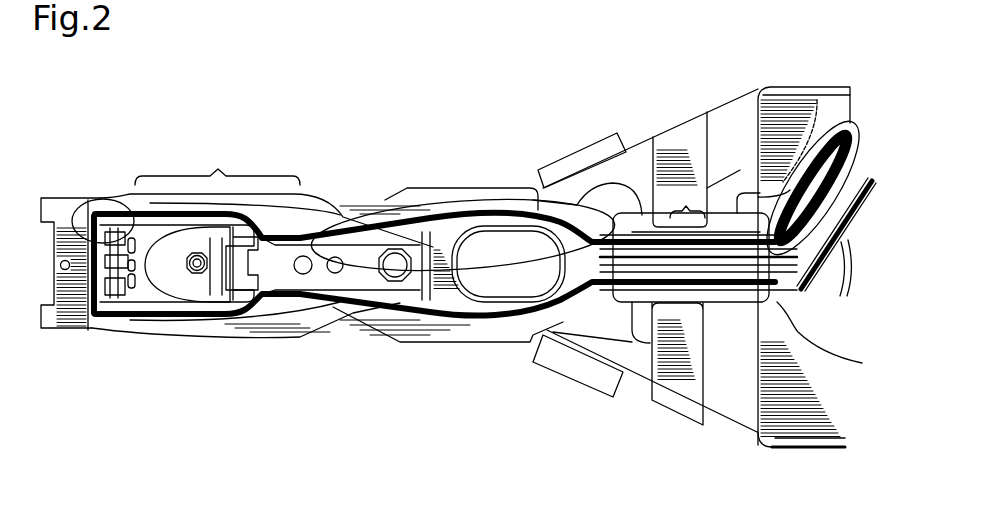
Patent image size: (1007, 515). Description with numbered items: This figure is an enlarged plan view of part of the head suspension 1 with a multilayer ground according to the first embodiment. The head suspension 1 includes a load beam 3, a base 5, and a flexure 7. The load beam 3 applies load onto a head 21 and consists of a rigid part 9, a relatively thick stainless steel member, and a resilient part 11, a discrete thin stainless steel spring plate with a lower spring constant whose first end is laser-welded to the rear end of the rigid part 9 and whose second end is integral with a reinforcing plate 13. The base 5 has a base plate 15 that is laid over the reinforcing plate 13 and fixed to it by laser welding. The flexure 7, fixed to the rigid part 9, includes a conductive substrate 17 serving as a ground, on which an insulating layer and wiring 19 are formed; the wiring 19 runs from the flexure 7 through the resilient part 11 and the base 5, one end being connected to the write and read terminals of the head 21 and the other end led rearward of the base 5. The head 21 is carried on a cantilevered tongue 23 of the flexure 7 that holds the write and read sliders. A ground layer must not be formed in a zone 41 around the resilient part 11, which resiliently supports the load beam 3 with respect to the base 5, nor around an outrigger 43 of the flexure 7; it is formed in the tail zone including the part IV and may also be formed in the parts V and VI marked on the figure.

The head suspension 1 is at (648, 103).
The load beam 3 is at (424, 187).
The base 5 is at (835, 449).
The flexure 7 is at (818, 281).
The rigid part 9 is at (595, 170).
The resilient part 11 is at (725, 106).
The reinforcing plate 13 is at (804, 448).
The base plate 15 is at (788, 441).
The substrate 17 is at (793, 322).
The wiring 19 is at (512, 205).
The head 21 is at (183, 340).
The tongue 23 is at (165, 280).
The zone 41 is at (698, 239).
The outrigger 43 is at (197, 227).
The part IV is at (817, 93).
The part V is at (447, 195).
The part VI is at (100, 197).